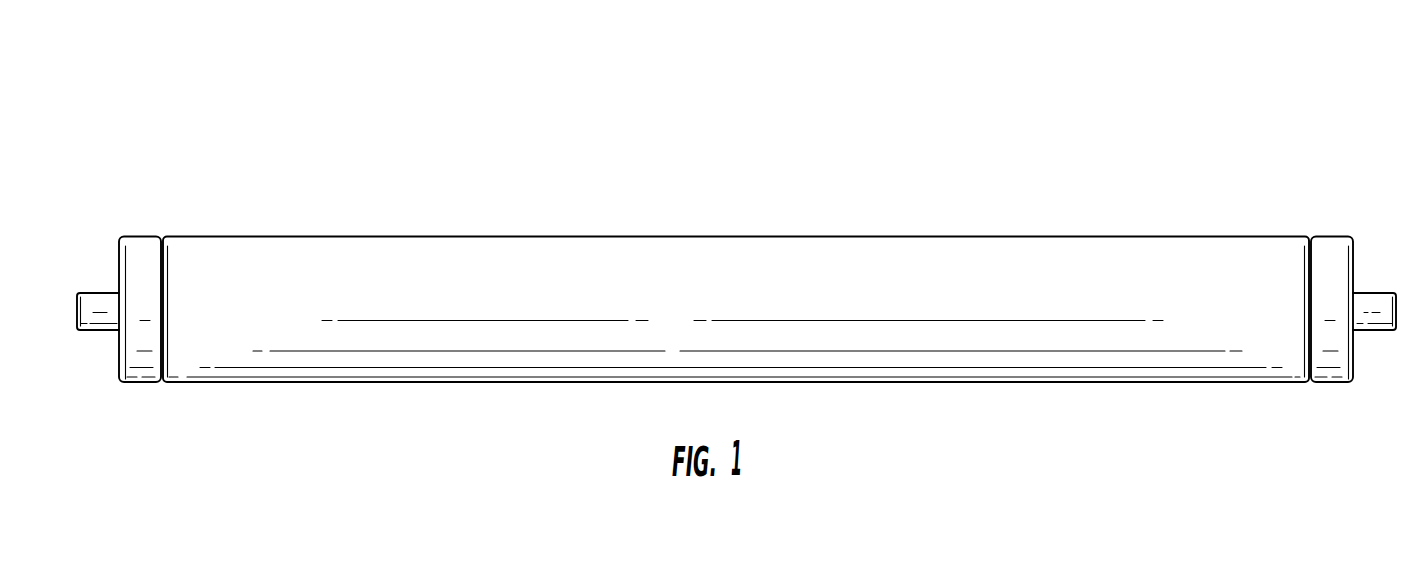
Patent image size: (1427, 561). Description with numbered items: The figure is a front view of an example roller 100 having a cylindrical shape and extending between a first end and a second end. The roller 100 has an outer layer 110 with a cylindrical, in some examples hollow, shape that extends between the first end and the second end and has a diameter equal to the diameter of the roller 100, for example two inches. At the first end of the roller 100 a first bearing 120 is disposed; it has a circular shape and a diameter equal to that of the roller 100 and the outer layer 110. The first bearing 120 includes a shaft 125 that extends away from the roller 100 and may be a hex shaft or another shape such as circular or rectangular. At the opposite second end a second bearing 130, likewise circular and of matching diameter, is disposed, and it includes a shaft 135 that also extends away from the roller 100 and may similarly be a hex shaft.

The roller 100 is at (205, 86).
The outer layer 110 is at (640, 253).
The first bearing 120 is at (144, 236).
The shaft 125 is at (102, 298).
The second bearing 130 is at (1332, 248).
The shaft 135 is at (1375, 298).